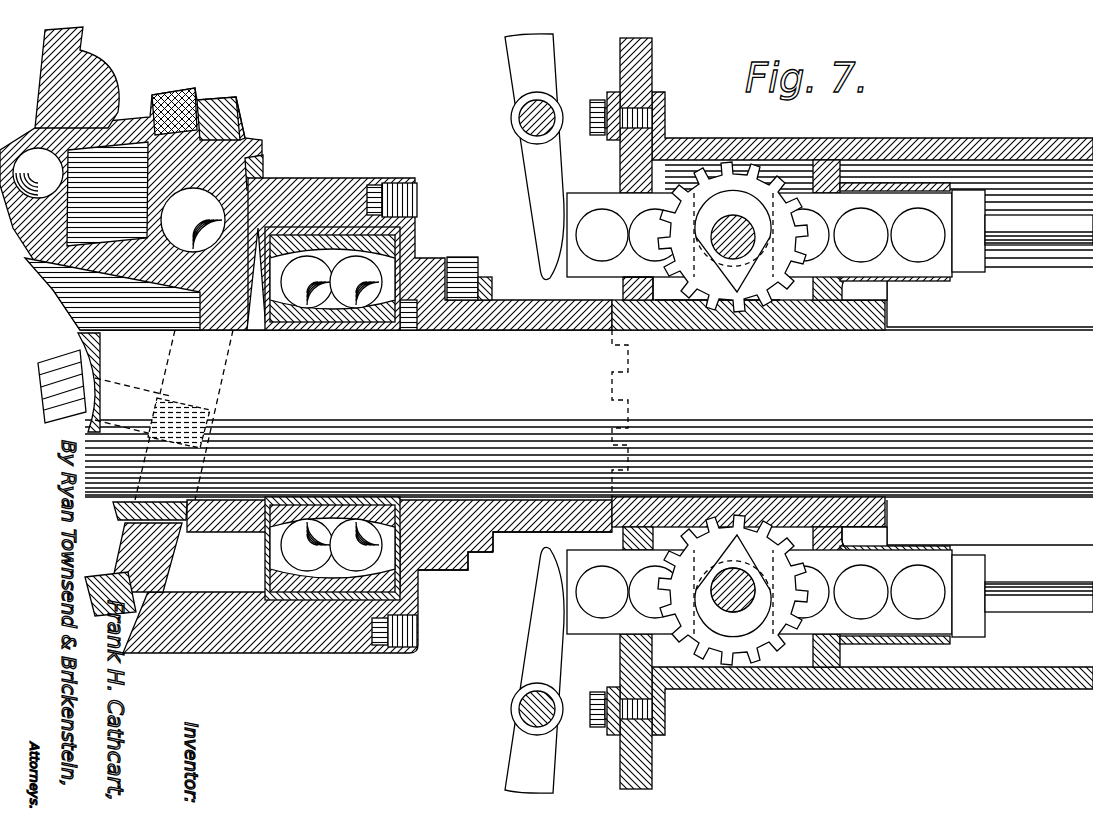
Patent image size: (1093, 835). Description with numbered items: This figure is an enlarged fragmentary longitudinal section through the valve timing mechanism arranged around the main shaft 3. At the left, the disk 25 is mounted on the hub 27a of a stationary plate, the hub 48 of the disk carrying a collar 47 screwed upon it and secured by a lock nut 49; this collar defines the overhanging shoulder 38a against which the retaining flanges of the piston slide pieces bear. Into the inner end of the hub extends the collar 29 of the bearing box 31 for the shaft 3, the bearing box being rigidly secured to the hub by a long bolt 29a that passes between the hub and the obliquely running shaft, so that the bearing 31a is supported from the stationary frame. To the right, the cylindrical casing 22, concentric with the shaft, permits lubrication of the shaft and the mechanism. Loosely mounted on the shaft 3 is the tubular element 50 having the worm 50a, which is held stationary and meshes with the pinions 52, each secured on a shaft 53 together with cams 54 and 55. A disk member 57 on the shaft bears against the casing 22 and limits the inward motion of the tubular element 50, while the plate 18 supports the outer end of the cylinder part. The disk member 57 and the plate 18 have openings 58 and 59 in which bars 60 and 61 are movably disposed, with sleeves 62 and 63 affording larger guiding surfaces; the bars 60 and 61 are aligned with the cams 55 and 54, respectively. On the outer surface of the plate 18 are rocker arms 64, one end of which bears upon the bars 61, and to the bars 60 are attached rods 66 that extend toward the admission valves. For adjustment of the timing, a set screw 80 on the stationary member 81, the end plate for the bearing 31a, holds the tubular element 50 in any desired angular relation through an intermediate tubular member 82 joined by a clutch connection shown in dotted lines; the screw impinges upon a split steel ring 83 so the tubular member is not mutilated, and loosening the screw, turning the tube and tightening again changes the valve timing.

The shaft 3 is at (585, 415).
The plate 18 is at (622, 158).
The cylindrical casing 22 is at (985, 682).
The disk 25 is at (115, 78).
The hub 27a is at (131, 209).
The collar 29 is at (150, 545).
The long bolt 29a is at (58, 358).
The bearing box 31 is at (328, 648).
The bearing 31a is at (283, 542).
The overhanging shoulder 38a is at (160, 97).
The collar 47 is at (207, 103).
The hub of the disk 48 is at (252, 172).
The lock nut 49 is at (242, 122).
The tubular element 50 is at (715, 318).
The worm 50a is at (780, 312).
The pinion 52 is at (765, 160).
The shaft 53 is at (700, 175).
The cam 54 is at (735, 213).
The cam 55 is at (737, 640).
The disk member 57 is at (902, 660).
The opening 58 is at (828, 160).
The opening 59 is at (655, 312).
The bar 60 is at (952, 268).
The bar 61 is at (577, 258).
The sleeve 62 is at (908, 282).
The sleeve 63 is at (620, 183).
The rocker arm 64 is at (523, 62).
The rod 66 is at (1045, 248).
The set screw 80 is at (455, 257).
The stationary member 81 is at (475, 568).
The intermediate tubular member 82 is at (512, 532).
The split steel ring 83 is at (490, 280).